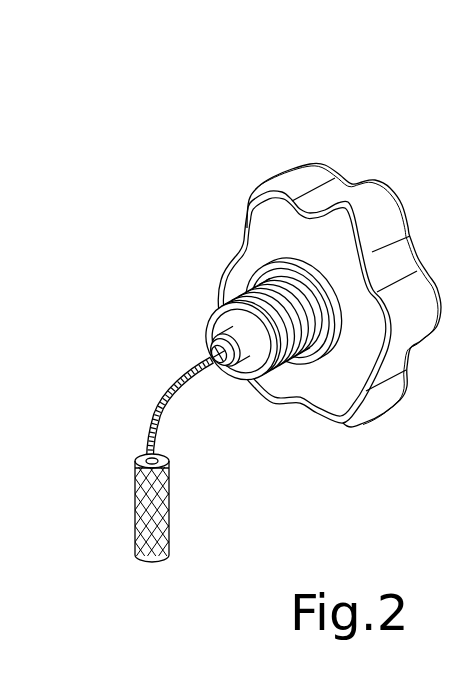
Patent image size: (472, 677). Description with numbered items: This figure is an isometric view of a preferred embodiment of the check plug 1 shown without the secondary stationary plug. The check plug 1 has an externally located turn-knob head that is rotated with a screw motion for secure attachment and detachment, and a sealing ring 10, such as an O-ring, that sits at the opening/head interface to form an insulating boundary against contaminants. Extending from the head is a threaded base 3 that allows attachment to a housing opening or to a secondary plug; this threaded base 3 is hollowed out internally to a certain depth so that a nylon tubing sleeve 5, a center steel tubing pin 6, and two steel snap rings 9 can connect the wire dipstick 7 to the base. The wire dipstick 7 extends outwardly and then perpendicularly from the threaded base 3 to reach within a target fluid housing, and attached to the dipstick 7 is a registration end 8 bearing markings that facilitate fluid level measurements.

The check plug 1 is at (281, 172).
The sealing ring 10 is at (258, 262).
The threaded base 3 is at (238, 290).
The nylon tubing sleeve 5 is at (220, 322).
The steel snap rings 9 is at (206, 333).
The center steel tubing pin 6 is at (204, 346).
The wire dipstick 7 is at (142, 432).
The registration end 8 is at (133, 497).